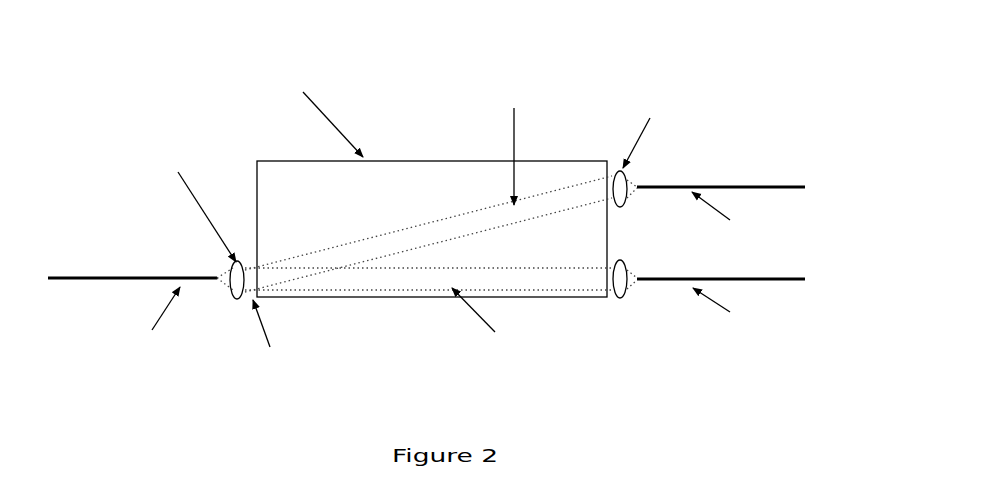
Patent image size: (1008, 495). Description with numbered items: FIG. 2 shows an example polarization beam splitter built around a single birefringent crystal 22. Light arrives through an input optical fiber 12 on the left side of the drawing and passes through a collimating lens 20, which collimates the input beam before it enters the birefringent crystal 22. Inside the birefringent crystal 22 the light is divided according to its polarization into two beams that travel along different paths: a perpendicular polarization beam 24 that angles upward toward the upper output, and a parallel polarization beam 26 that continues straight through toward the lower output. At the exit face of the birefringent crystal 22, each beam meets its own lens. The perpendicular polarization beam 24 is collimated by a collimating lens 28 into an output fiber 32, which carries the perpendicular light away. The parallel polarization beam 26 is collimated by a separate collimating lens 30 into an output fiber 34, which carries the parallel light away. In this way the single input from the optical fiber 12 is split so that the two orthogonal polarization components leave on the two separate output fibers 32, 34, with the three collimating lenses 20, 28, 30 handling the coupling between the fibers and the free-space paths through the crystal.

The optical fiber 12 is at (105, 278).
The collimating lens 20 is at (241, 300).
The birefringent crystal 22 is at (395, 160).
The perpendicular polarization beam 24 is at (452, 72).
The parallel polarization beam 26 is at (552, 351).
The collimating lens 28 is at (625, 177).
The collimating lens 30 is at (621, 299).
The output fiber 32 is at (750, 187).
The output fiber 34 is at (623, 263).